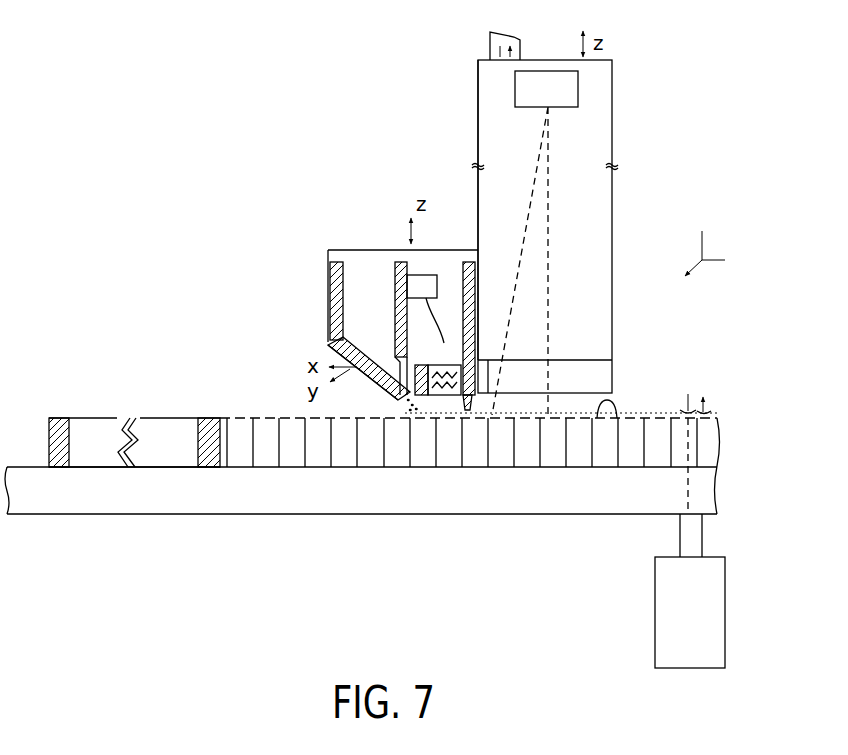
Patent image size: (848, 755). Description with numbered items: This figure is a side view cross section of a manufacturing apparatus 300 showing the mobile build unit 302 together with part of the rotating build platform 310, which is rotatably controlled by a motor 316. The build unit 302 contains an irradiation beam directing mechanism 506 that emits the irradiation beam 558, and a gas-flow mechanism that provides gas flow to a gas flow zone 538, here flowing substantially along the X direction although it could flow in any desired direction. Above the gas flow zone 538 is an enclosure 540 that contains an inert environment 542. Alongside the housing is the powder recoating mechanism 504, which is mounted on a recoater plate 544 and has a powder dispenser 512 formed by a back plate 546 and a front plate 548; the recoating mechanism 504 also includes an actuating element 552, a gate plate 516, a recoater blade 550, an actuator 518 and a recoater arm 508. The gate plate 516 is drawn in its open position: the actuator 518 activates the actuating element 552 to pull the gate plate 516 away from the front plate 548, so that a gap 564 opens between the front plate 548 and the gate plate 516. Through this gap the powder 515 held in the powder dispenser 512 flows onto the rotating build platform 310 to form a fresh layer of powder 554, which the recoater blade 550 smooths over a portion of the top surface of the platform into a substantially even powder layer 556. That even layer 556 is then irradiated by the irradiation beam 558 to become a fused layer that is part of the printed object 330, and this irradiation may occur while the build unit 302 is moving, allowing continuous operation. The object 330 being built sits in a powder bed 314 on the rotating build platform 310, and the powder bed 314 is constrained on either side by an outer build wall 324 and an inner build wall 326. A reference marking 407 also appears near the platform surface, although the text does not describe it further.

The manufacturing apparatus 300 is at (252, 118).
The build unit 302 is at (447, 53).
The irradiation beam directing mechanism 506 is at (538, 72).
The enclosure 540 is at (478, 108).
The inert environment 542 is at (478, 133).
The irradiation beam 558 is at (553, 211).
The gas flow zone 538 is at (560, 368).
The powder recoating mechanism 504 is at (475, 187).
The recoater plate 544 is at (328, 285).
The back plate 546 is at (334, 260).
The powder dispenser 512 is at (395, 242).
The recoater arm 508 is at (472, 260).
The front plate 548 is at (410, 276).
The gate plate 516 is at (415, 365).
The powder 515 is at (362, 327).
The actuator 518 is at (440, 396).
The actuating element 552 is at (444, 366).
The recoater blade 550 is at (463, 400).
The gap 564 is at (409, 396).
The fresh layer of powder 554 is at (398, 407).
The conveyor top surface 407 is at (651, 416).
The rotating build platform 310 is at (135, 500).
The powder bed 314 is at (175, 430).
The outer build wall 324 is at (57, 425).
The inner build wall 326 is at (205, 425).
The printed object 330 is at (128, 425).
The substantially even powder layer 556 is at (622, 403).
The motor 316 is at (710, 628).